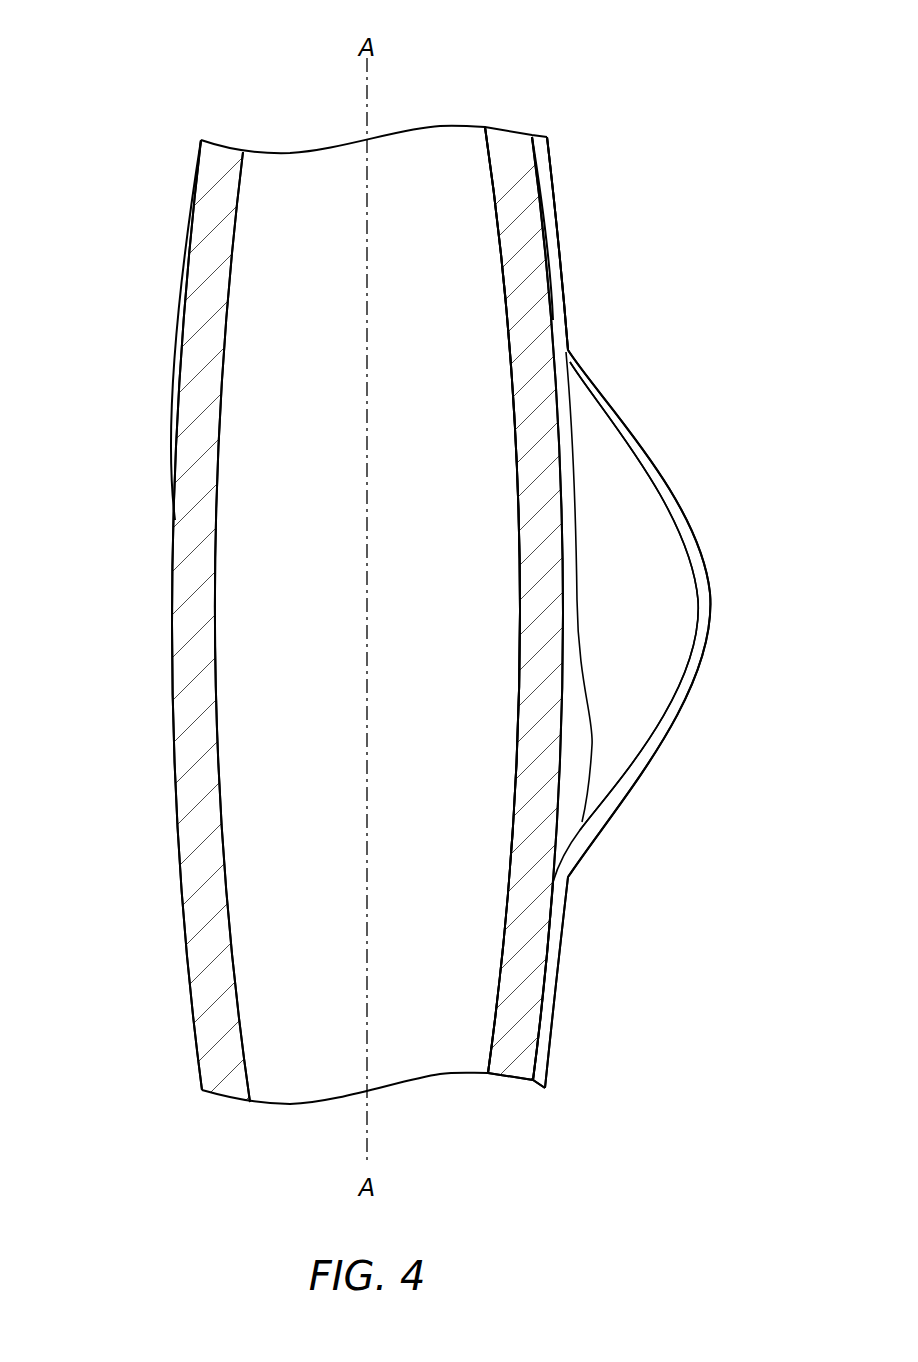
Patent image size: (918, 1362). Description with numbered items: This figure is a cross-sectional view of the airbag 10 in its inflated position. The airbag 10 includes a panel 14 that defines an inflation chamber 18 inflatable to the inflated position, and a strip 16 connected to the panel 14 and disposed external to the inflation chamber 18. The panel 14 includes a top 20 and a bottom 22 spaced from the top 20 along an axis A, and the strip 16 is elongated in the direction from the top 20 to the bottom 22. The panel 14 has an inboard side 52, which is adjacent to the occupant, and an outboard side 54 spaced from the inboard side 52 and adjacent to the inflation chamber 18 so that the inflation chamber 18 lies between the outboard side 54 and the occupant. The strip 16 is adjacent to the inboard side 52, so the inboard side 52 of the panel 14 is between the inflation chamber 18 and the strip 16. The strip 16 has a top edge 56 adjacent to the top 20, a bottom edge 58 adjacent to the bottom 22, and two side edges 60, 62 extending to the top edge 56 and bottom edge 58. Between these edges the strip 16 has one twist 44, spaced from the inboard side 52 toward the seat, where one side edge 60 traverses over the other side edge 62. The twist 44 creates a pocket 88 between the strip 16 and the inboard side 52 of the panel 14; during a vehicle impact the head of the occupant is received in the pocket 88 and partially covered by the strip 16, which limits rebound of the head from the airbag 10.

The airbag 10 is at (102, 63).
The panel 14 is at (168, 385).
The strip 16 is at (570, 210).
The inflation chamber 18 is at (308, 678).
The top 20 is at (513, 124).
The bottom 22 is at (505, 1087).
The twist 44 is at (708, 547).
The inboard side 52 is at (492, 193).
The outboard side 54 is at (188, 227).
The top edge 56 is at (547, 137).
The bottom edge 58 is at (547, 1088).
The side edge 60 is at (563, 938).
The side edge 62 is at (562, 260).
The pocket 88 is at (637, 638).